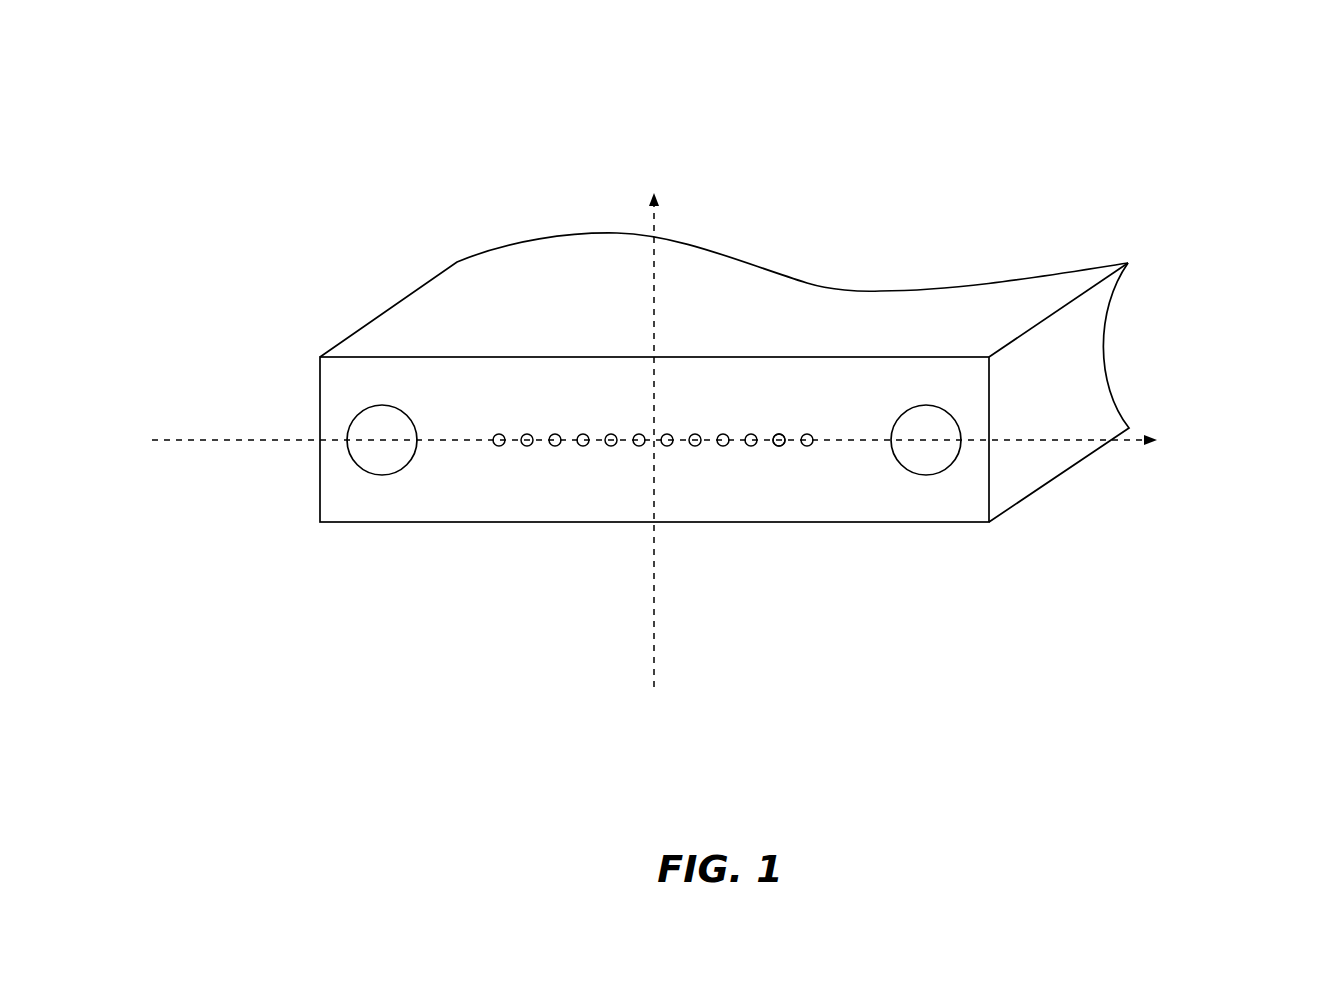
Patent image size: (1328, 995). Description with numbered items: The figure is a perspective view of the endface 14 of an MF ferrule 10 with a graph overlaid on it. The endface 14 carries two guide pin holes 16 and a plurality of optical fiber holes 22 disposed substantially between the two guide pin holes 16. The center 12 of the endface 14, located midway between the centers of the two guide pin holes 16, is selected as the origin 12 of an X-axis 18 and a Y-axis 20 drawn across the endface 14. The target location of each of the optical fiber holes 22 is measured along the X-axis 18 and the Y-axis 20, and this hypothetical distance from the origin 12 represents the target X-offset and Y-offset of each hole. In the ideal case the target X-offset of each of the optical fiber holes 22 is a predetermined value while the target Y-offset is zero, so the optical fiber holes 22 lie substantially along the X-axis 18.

The MF ferrule 10 is at (940, 258).
The center of the endface 12 is at (670, 420).
The endface 14 is at (483, 500).
The guide pin holes 16 is at (412, 420).
The X-axis 18 is at (1178, 415).
The Y-axis 20 is at (675, 137).
The optical fiber holes 22 is at (767, 420).